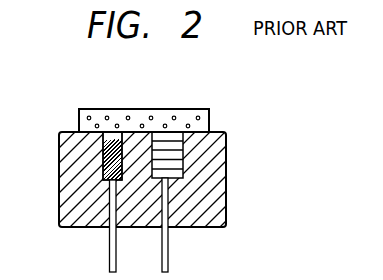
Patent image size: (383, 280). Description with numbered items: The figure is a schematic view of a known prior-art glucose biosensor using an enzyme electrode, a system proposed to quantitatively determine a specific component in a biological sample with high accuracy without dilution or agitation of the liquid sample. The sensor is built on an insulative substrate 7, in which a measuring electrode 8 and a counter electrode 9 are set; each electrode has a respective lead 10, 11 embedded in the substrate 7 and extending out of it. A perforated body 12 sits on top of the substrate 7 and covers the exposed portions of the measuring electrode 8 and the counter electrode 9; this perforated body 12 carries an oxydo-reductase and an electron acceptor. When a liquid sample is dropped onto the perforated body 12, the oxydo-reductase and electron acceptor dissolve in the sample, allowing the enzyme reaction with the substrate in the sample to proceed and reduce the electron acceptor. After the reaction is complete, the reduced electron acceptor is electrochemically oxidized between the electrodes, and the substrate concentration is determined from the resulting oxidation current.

The insulative substrate 7 is at (218, 183).
The measuring electrode 8 is at (103, 171).
The counter electrode 9 is at (183, 158).
The lead 10 is at (109, 256).
The lead 11 is at (168, 254).
The perforated body 12 is at (93, 109).